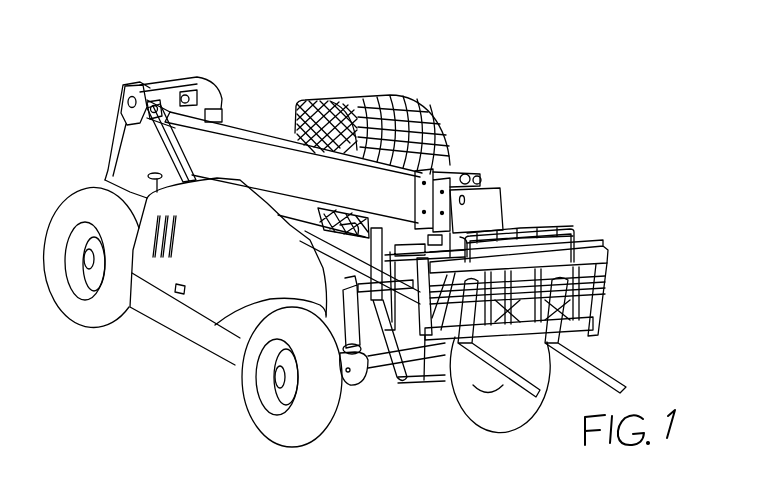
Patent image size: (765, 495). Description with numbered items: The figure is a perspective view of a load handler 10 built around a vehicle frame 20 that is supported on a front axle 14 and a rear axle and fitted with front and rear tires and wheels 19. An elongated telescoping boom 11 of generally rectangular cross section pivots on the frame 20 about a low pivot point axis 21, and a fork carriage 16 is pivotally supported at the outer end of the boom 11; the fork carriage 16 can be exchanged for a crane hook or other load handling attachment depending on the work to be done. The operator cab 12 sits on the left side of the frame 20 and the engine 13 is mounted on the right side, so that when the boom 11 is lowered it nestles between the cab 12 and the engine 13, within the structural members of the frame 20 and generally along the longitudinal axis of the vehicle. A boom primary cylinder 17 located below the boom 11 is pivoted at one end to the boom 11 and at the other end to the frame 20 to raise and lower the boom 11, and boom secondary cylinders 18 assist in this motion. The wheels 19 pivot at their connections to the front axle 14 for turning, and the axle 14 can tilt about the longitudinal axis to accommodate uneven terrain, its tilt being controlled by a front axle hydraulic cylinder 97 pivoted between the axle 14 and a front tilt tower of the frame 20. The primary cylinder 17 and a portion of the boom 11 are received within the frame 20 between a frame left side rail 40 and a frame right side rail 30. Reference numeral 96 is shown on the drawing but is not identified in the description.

The load handler 10 is at (157, 44).
The telescoping boom 11 is at (247, 127).
The operator cab 12 is at (417, 120).
The engine 13 is at (203, 318).
The front axle 14 is at (433, 383).
The fork carriage 16 is at (580, 250).
The boom primary cylinder 17 is at (317, 217).
The boom secondary cylinders 18 is at (180, 141).
The tires and wheels 19 is at (67, 300).
The vehicle frame 20 is at (111, 158).
The pivot point axis 21 is at (128, 103).
The frame right side rail 30 is at (372, 387).
The frame left side rail 40 is at (417, 380).
The tilt cylinder 96 is at (350, 317).
The front axle hydraulic cylinder 97 is at (373, 297).